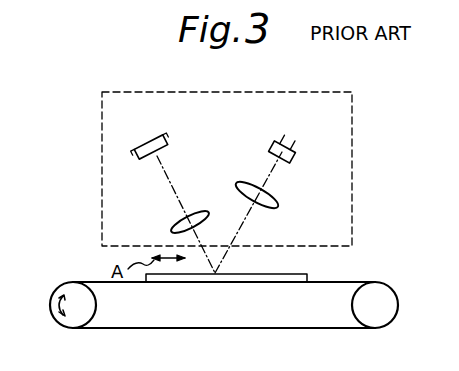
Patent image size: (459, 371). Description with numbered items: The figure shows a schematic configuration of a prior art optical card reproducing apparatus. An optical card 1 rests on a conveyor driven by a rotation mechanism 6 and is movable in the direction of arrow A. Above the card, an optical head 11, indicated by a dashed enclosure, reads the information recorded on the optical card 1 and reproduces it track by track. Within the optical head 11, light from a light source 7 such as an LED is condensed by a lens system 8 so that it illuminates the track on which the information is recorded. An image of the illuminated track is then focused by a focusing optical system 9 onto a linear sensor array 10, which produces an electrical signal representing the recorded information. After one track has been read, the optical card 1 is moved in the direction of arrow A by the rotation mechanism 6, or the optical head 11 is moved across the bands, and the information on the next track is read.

The optical card 1 is at (307, 275).
The rotation mechanism 6 is at (78, 325).
The light source 7 is at (294, 158).
The lens system 8 is at (280, 203).
The focusing optical system 9 is at (203, 212).
The linear sensor array 10 is at (157, 142).
The optical head 11 is at (352, 164).